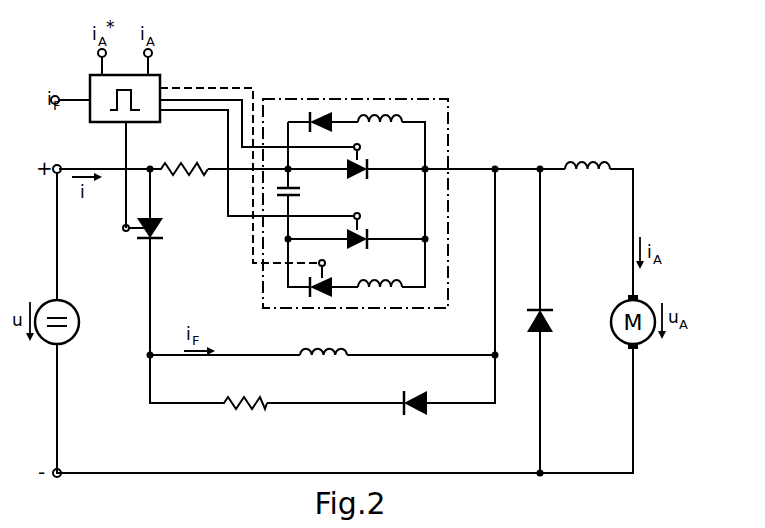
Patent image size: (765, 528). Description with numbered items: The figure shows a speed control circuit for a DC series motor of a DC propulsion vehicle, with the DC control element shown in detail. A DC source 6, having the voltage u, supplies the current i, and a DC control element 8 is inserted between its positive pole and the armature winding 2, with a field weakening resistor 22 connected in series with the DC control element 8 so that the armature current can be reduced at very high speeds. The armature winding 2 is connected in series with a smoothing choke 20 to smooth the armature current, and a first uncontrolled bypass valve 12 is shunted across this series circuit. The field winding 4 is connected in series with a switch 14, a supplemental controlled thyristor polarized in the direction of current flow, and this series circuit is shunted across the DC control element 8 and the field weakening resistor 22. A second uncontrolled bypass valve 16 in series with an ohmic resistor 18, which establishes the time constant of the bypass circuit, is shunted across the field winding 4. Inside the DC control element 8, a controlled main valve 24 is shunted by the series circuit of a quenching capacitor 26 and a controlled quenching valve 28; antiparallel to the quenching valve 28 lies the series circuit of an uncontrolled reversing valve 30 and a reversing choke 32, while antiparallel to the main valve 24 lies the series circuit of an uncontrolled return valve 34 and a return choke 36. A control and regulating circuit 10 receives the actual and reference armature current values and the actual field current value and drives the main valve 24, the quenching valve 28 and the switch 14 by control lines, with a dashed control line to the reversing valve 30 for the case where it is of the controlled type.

The armature winding 2 is at (617, 334).
The field winding 4 is at (336, 352).
The DC source 6 is at (70, 338).
The DC control element 8 is at (430, 99).
The control and regulating circuit 10 is at (90, 108).
The first uncontrolled bypass valve 12 is at (548, 310).
The switch 14 is at (163, 232).
The second uncontrolled bypass valve 16 is at (425, 396).
The ohmic resistor 18 is at (242, 396).
The smoothing choke 20 is at (575, 165).
The field weakening resistor 22 is at (196, 166).
The controlled main valve 24 is at (370, 165).
The quenching capacitor 26 is at (300, 188).
The controlled quenching valve 28 is at (370, 230).
The uncontrolled reversing valve 30 is at (333, 282).
The reversing choke 32 is at (381, 282).
The uncontrolled return valve 34 is at (326, 112).
The return choke 36 is at (373, 113).